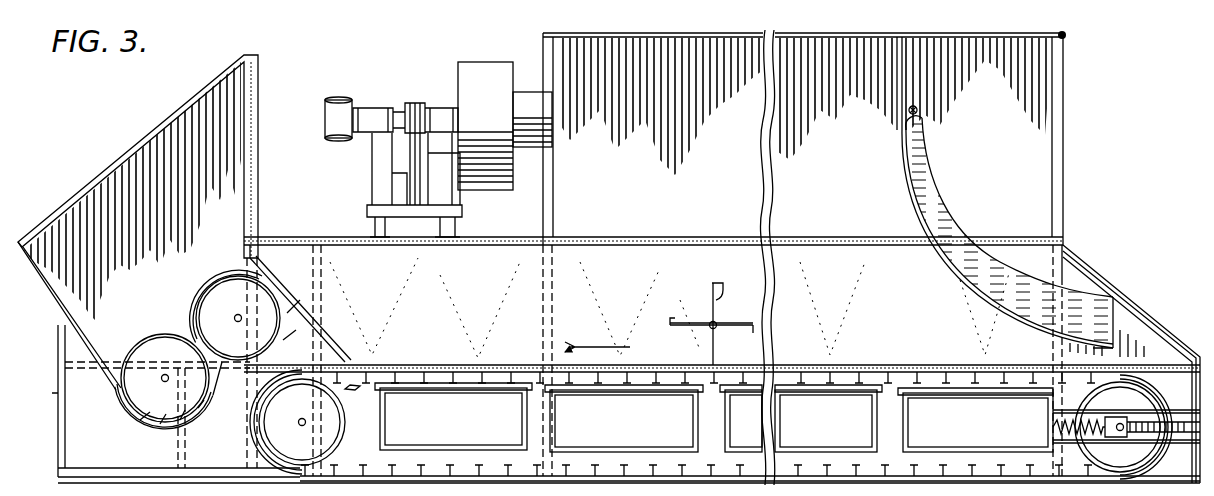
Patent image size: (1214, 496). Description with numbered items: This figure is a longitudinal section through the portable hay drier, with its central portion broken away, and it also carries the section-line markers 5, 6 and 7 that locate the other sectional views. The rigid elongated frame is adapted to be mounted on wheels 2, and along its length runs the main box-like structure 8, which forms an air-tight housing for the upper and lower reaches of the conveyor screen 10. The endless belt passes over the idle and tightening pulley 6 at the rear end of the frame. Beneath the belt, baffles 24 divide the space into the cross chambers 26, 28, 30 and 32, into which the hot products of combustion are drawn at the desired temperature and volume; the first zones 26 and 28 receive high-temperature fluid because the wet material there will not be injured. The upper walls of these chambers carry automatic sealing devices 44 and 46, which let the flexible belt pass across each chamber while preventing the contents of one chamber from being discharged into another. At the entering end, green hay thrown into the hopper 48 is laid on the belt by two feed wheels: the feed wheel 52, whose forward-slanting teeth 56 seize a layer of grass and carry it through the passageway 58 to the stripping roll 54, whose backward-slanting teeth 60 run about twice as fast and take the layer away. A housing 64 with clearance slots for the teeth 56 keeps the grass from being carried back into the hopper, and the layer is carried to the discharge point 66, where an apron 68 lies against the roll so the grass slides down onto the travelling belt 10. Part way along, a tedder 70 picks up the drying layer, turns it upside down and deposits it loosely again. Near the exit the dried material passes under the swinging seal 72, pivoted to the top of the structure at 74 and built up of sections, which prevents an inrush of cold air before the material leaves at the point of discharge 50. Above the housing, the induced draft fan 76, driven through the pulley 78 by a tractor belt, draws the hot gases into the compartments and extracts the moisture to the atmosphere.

The wheels 2 is at (295, 453).
The main box-like structure 8 is at (608, 255).
The conveyor screen 10 is at (722, 401).
The baffles 24 is at (520, 413).
The cross chamber 26 is at (453, 416).
The cross chamber 28 is at (624, 418).
The cross chamber 30 is at (828, 418).
The cross chamber 32 is at (975, 420).
The automatic sealing device 44 is at (393, 385).
The automatic sealing device 46 is at (505, 386).
The hopper 48 is at (77, 322).
The point of discharge 50 is at (1130, 318).
The feed wheel 52 is at (155, 350).
The stripping roll 54 is at (230, 283).
The teeth 56 is at (130, 412).
The passageway 58 is at (142, 412).
The teeth 60 is at (287, 313).
The housing 64 is at (185, 330).
The discharge point 66 is at (275, 285).
The apron 68 is at (323, 342).
The tedder 70 is at (722, 292).
The swinging seal 72 is at (972, 288).
The pivot 74 is at (920, 107).
The induced draft fan 76 is at (489, 80).
The pulley 78 is at (336, 97).
The section line 5 is at (275, 237).
The idle and tightening pulley 6 is at (1066, 247).
The section line 7 is at (265, 280).